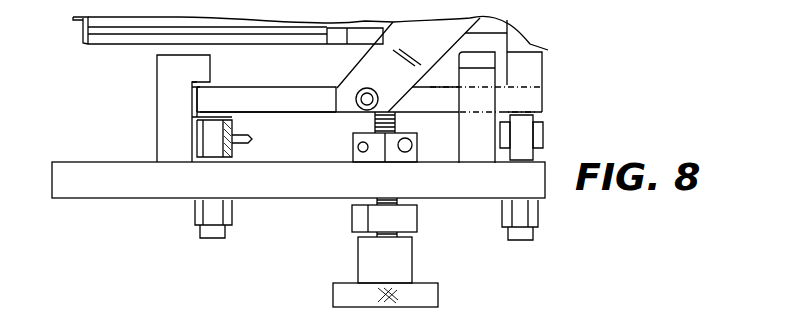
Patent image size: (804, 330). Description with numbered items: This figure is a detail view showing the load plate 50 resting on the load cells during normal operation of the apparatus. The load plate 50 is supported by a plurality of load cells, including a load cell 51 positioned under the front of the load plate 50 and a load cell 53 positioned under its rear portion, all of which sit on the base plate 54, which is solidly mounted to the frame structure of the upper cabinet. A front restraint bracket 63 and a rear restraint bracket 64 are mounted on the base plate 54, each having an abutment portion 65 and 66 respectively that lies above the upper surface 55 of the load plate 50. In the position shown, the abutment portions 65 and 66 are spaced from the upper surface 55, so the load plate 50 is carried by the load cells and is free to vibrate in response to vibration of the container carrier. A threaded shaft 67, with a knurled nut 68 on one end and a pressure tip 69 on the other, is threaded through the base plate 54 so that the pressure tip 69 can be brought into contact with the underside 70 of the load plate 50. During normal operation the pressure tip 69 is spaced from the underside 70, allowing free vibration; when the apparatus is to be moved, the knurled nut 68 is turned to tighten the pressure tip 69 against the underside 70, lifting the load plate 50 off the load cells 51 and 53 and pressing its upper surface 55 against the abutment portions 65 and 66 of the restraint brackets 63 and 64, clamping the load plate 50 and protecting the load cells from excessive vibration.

The load plate 50 is at (318, 102).
The load cell 51 is at (521, 131).
The load cell 53 is at (213, 143).
The base plate 54 is at (95, 161).
The upper surface 55 is at (323, 86).
The front restraint bracket 63 is at (536, 147).
The rear restraint bracket 64 is at (174, 103).
The abutment portion 65 is at (474, 90).
The abutment portion 66 is at (206, 86).
The threaded shaft 67 is at (398, 118).
The knurled nut 68 is at (332, 293).
The pressure tip 69 is at (388, 110).
The underside 70 is at (285, 113).